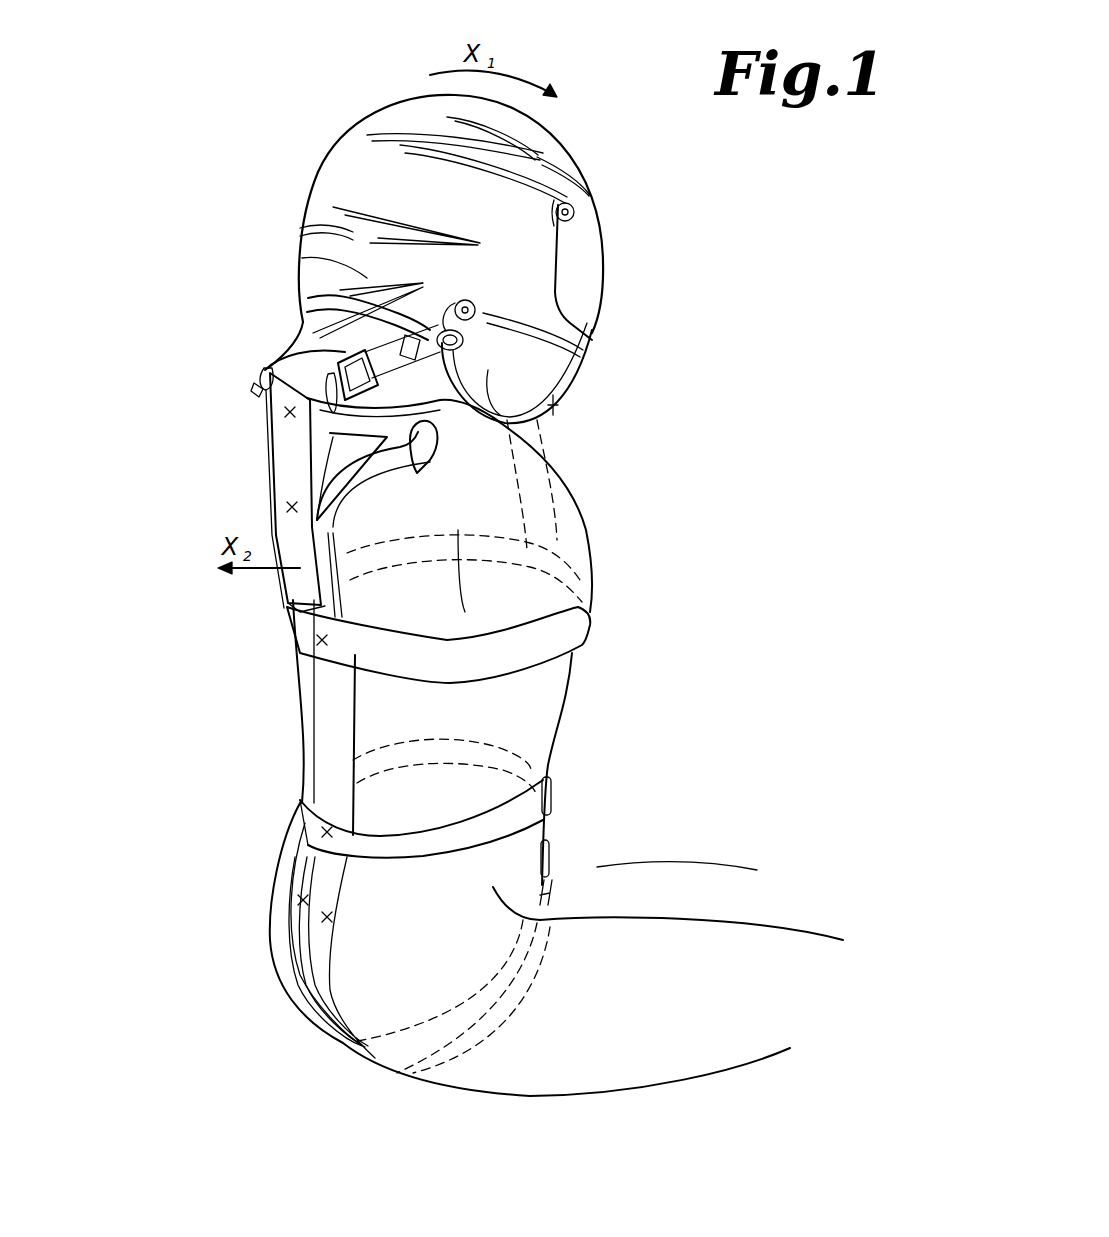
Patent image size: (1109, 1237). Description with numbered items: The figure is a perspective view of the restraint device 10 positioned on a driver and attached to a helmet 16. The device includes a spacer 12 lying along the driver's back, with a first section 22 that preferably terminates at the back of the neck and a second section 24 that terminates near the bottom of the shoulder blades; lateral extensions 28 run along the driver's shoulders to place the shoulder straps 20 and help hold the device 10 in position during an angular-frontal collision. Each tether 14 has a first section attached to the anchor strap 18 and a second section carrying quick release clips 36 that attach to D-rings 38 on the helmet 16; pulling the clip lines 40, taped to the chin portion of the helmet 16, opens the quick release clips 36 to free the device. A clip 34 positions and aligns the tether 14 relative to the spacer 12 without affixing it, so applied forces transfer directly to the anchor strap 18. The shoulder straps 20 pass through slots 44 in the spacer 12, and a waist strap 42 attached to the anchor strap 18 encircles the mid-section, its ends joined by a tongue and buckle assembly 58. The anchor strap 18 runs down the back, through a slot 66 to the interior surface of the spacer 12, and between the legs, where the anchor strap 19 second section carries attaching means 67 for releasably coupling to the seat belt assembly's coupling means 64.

The restraint device 10 is at (231, 797).
The spacer 12 is at (336, 532).
The tether 14 is at (342, 296).
The helmet 16 is at (385, 100).
The anchor strap 18 is at (313, 867).
The anchor strap 19 is at (322, 940).
The shoulder straps 20 is at (380, 412).
The first section 22 is at (293, 358).
The second section 24 is at (338, 590).
The lateral extensions 28 is at (255, 390).
The clip 34 is at (328, 377).
The quick release clips 36 is at (420, 346).
The D-rings 38 is at (390, 333).
The clip lines 40 is at (537, 420).
The waist strap 42 is at (403, 833).
The slots 44 is at (267, 412).
The tongue and buckle assembly 58 is at (553, 790).
The coupling means 64 is at (550, 855).
The slot 66 is at (300, 601).
The releasable attaching means 67 is at (548, 884).